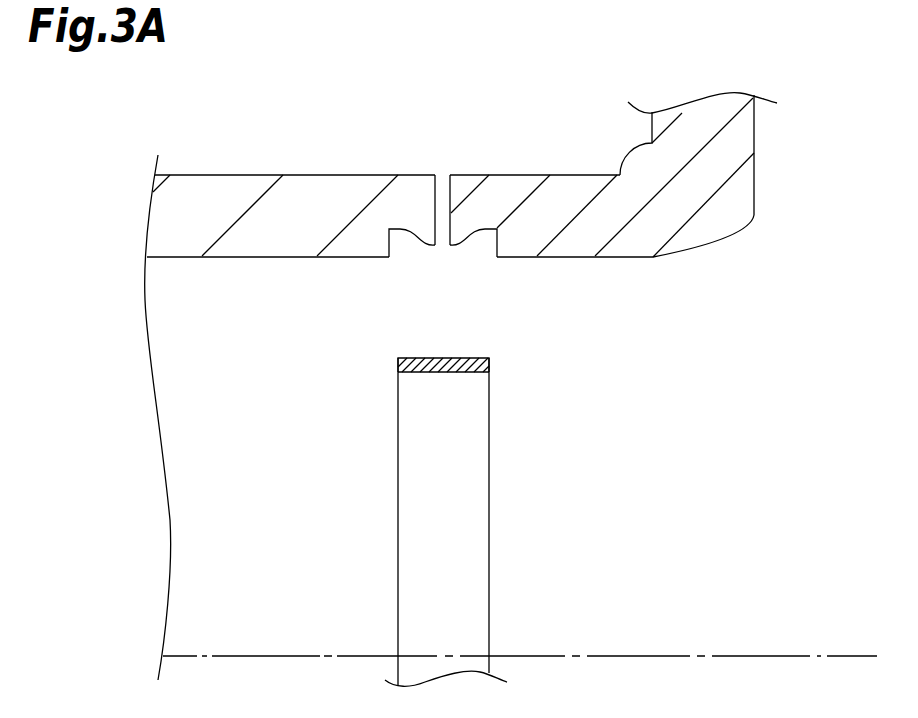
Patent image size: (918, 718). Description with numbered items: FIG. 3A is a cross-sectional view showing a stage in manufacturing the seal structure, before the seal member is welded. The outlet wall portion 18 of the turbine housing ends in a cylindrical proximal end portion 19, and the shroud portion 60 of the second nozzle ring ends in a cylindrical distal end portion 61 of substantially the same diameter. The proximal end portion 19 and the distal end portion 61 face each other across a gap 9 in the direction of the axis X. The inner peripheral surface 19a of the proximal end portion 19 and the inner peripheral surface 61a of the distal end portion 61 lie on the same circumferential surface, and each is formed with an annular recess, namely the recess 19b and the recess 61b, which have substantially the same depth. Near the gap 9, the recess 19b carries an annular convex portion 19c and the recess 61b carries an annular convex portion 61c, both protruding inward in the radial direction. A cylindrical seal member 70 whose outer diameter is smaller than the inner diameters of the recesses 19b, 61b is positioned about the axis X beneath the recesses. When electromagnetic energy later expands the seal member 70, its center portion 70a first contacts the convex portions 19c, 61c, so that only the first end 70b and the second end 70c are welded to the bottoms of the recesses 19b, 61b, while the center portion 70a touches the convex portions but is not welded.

The outlet wall portion 18 is at (228, 166).
The proximal end portion 19 is at (413, 166).
The inner peripheral surface 19a is at (367, 257).
The recess 19b is at (398, 231).
The convex portion 19c is at (420, 241).
The gap 9 is at (443, 183).
The distal end portion 61 is at (474, 166).
The inner peripheral surface 61a is at (520, 258).
The recess 61b is at (487, 231).
The convex portion 61c is at (465, 241).
The shroud portion 60 is at (764, 160).
The seal member 70 is at (498, 483).
The center portion 70a is at (443, 372).
The first end 70b is at (398, 362).
The second end 70c is at (489, 365).
The axis X is at (835, 656).